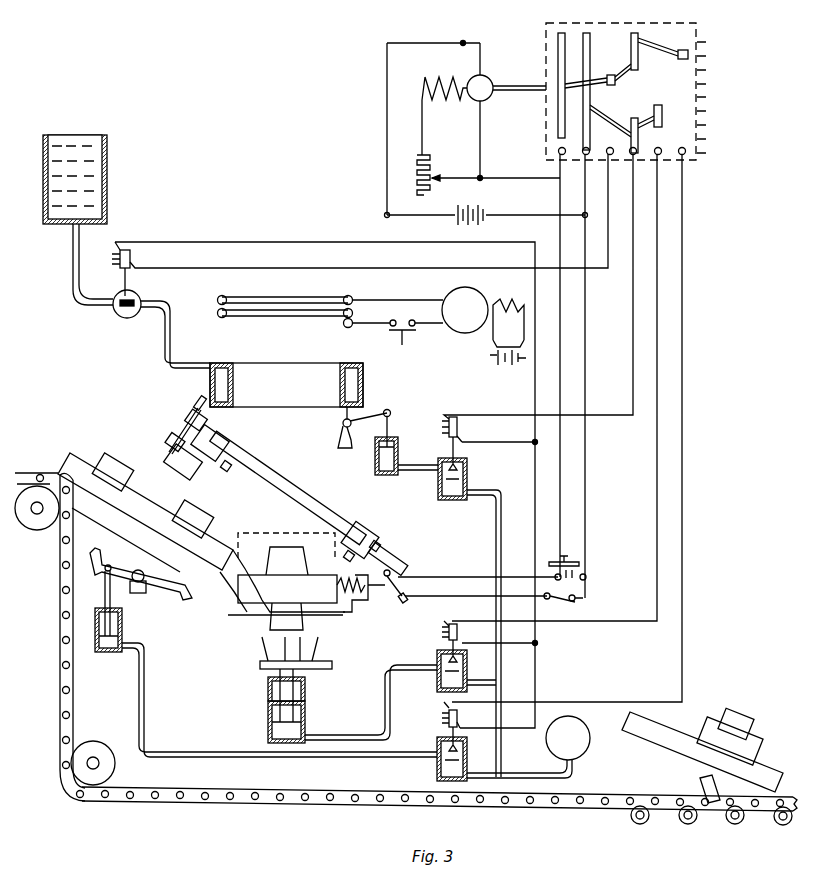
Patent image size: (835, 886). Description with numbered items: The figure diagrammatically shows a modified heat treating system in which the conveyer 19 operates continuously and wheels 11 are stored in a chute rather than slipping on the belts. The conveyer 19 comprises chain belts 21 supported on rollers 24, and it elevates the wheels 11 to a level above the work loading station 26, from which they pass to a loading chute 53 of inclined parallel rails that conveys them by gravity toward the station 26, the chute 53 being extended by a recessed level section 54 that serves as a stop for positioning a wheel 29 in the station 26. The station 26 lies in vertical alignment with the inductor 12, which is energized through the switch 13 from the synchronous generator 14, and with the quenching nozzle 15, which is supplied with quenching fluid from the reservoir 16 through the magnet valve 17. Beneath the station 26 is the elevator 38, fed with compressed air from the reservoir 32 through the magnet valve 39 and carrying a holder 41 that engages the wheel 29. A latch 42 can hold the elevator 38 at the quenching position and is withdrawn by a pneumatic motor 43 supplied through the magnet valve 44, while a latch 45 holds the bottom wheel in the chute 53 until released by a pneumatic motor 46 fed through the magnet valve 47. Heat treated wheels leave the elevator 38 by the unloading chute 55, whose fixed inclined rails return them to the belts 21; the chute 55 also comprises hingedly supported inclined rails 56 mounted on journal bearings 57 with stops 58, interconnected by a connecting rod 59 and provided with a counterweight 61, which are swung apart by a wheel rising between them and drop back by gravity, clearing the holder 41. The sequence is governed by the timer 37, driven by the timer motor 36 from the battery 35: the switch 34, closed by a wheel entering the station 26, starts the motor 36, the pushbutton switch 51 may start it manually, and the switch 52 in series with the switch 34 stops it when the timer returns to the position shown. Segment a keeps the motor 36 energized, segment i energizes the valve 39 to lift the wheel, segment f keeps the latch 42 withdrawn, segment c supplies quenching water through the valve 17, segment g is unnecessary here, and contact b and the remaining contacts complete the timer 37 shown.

The wheels 11 is at (108, 452).
The inductor 12 is at (222, 318).
The switch 13 is at (397, 336).
The synchronous generator 14 is at (467, 332).
The quenching nozzle 15 is at (226, 364).
The reservoir 16 is at (108, 188).
The magnet valve 17 is at (131, 254).
The conveyer 19 is at (48, 555).
The chain belts 21 is at (538, 812).
The rollers 24 is at (640, 824).
The work loading station 26 is at (252, 532).
The wheel 29 is at (268, 550).
The reservoir 32 is at (584, 751).
The switch 34 is at (398, 596).
The battery 35 is at (492, 212).
The timer motor 36 is at (472, 99).
The timer 37 is at (607, 89).
The elevator 38 is at (305, 715).
The magnet valve 39 is at (437, 658).
The holder 41 is at (305, 655).
The latch 42 is at (339, 450).
The pneumatic motor 43 is at (386, 476).
The magnet valve 44 is at (470, 472).
The latch 45 is at (168, 592).
The pneumatic motor 46 is at (110, 652).
The magnet valve 47 is at (437, 766).
The pushbutton switch 51 is at (568, 556).
The switch 52 is at (560, 600).
The chute 53 is at (222, 594).
The recessed level section 54 is at (352, 616).
The unloading chute 55 is at (405, 554).
The hingedly supported inclined rails 56 is at (330, 492).
The journal bearings 57 is at (224, 438).
The stops 58 is at (226, 470).
The connecting rod 59 is at (186, 430).
The counterweight 61 is at (176, 475).
The timer segment a is at (565, 40).
The timer segment b is at (590, 56).
The timer segment c is at (610, 85).
The timer segment f is at (638, 62).
The timer segment g is at (683, 59).
The timer segment i is at (662, 112).